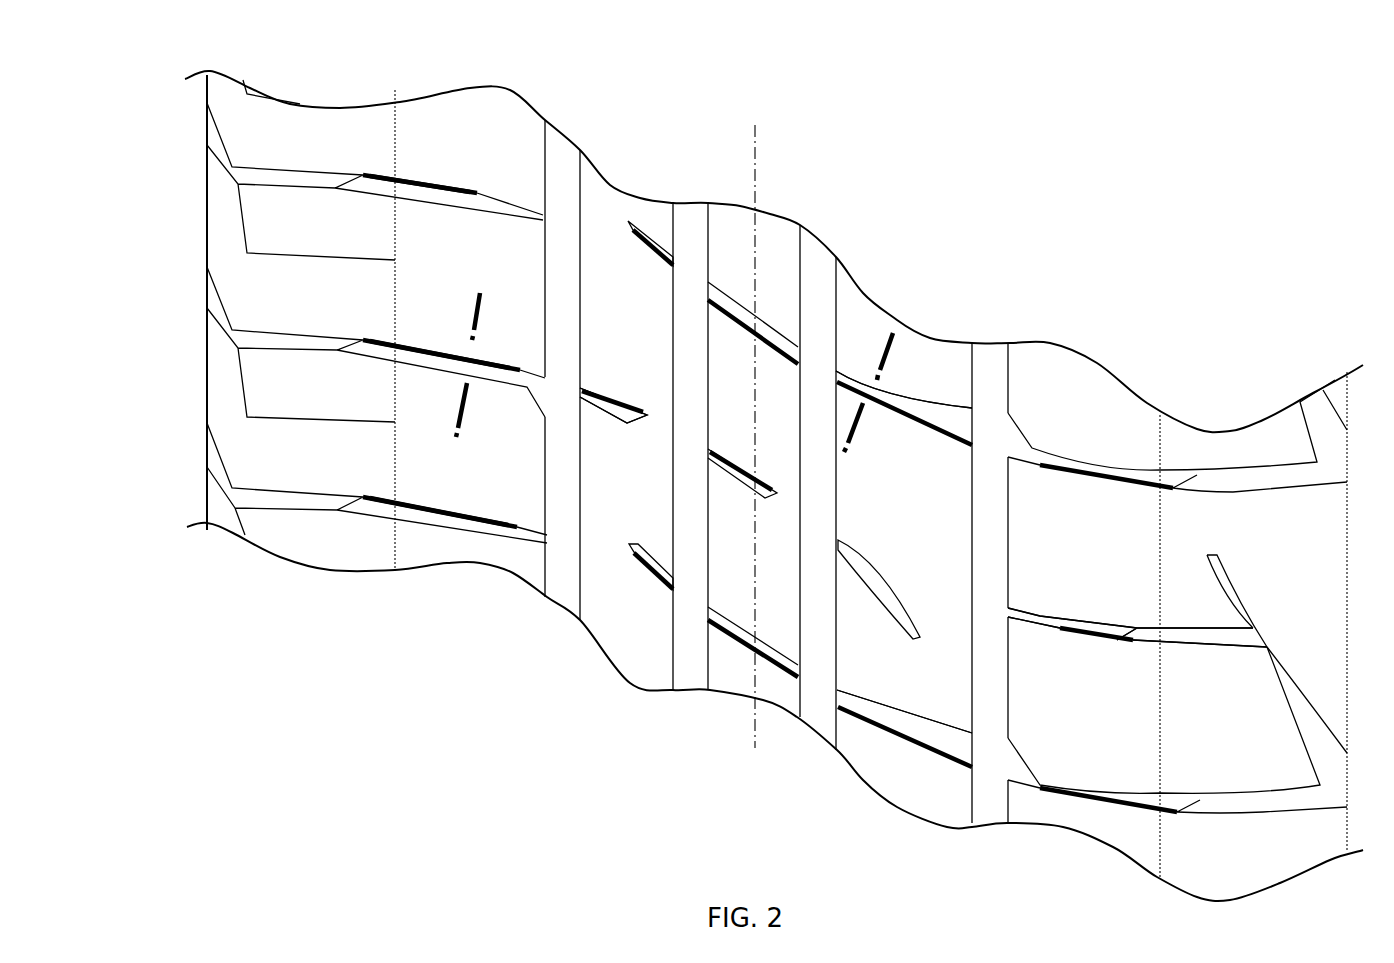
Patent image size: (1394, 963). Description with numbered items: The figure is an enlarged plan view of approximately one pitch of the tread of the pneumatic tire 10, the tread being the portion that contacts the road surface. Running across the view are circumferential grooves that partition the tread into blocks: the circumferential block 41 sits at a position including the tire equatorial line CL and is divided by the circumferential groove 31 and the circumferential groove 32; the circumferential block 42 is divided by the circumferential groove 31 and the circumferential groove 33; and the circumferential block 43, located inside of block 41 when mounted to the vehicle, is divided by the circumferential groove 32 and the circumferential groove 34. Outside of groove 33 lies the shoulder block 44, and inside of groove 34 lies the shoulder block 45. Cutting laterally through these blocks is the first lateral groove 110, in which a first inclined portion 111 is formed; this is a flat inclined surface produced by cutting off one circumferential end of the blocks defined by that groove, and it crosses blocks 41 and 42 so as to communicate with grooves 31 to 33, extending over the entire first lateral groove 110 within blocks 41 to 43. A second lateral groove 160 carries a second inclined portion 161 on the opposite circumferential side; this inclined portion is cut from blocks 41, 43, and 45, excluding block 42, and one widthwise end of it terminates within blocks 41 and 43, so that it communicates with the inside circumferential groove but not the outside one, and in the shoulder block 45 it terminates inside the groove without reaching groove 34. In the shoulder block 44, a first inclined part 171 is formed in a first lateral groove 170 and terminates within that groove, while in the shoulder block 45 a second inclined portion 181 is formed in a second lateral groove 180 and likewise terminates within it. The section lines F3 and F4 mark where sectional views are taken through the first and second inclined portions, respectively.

The pneumatic tire 10 is at (1300, 306).
The tire equatorial line CL is at (757, 150).
The circumferential groove 31 is at (820, 700).
The circumferential groove 32 is at (690, 660).
The circumferential groove 33 is at (990, 797).
The circumferential groove 34 is at (562, 612).
The circumferential block 41 is at (733, 223).
The circumferential block 42 is at (873, 317).
The circumferential block 43 is at (610, 200).
The shoulder block 44 is at (1057, 378).
The shoulder block 45 is at (453, 113).
The first lateral groove 110 is at (940, 390).
The first inclined portion 111 is at (668, 235).
The second lateral groove 160 is at (615, 377).
The second inclined portion 161 is at (457, 350).
The first lateral groove 170 is at (1045, 610).
The first inclined part 171 is at (1090, 630).
The second lateral groove 180 is at (490, 200).
The second inclined portion 181 is at (413, 180).
The section line F3- F3 is at (906, 357).
The section line F4- F4 is at (493, 316).